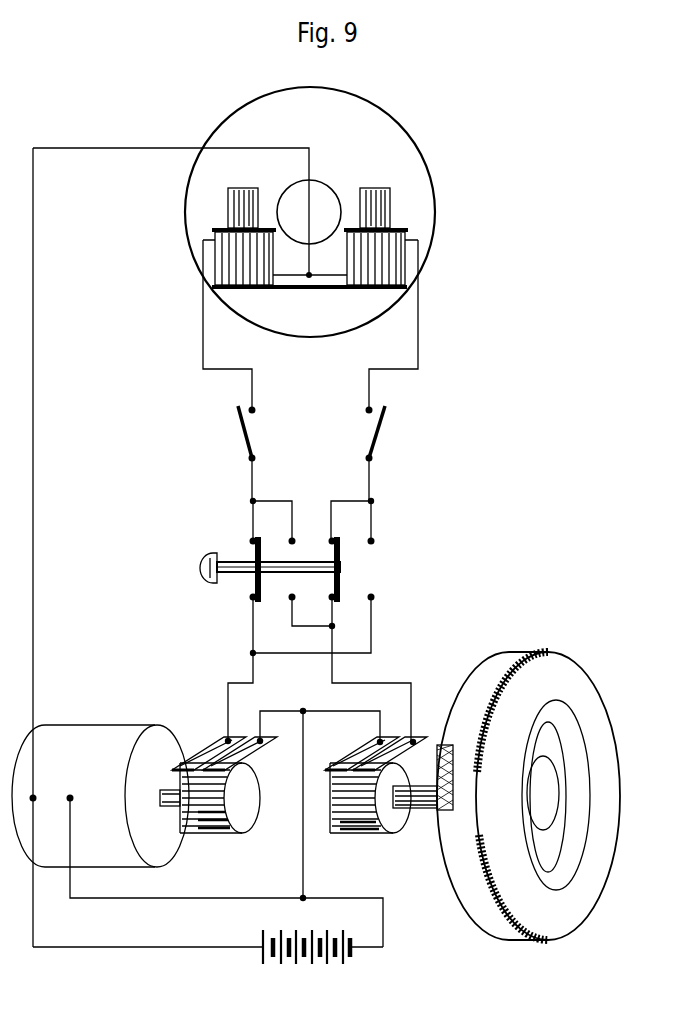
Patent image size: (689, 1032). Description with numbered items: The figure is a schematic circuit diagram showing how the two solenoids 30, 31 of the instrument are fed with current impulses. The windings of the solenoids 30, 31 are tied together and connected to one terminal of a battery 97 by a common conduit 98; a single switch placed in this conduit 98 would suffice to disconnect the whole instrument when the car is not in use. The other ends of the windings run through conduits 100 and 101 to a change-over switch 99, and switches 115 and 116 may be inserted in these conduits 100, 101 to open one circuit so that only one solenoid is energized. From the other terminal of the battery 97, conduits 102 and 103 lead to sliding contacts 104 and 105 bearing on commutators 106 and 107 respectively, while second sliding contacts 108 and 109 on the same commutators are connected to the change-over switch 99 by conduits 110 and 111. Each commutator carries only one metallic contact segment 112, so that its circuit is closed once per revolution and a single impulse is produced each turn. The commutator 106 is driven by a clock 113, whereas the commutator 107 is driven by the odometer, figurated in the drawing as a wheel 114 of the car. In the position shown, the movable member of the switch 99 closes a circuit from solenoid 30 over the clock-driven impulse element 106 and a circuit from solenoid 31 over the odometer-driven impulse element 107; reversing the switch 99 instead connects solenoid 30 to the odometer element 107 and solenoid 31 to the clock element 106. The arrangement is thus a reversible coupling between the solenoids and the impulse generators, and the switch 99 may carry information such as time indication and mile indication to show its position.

The solenoid 30 is at (228, 258).
The solenoid 31 is at (388, 253).
The battery 97 is at (313, 960).
The common conduit 98 is at (33, 572).
The change-over switch 99 is at (370, 570).
The conduit 100 is at (203, 342).
The conduit 101 is at (418, 343).
The conduit 102 is at (270, 711).
The conduit 103 is at (332, 711).
The sliding contact 104 is at (252, 752).
The sliding contact 105 is at (363, 745).
The commutator 106 is at (245, 797).
The commutator 107 is at (397, 822).
The second sliding contact 108 is at (220, 738).
The second sliding contact 109 is at (392, 752).
The conduit 110 is at (226, 683).
The conduit 111 is at (382, 683).
The metallic contact segment 112 is at (224, 826).
The clock 113 is at (124, 740).
The wheel 114 is at (535, 652).
The switch 115 is at (238, 424).
The switch 116 is at (385, 436).